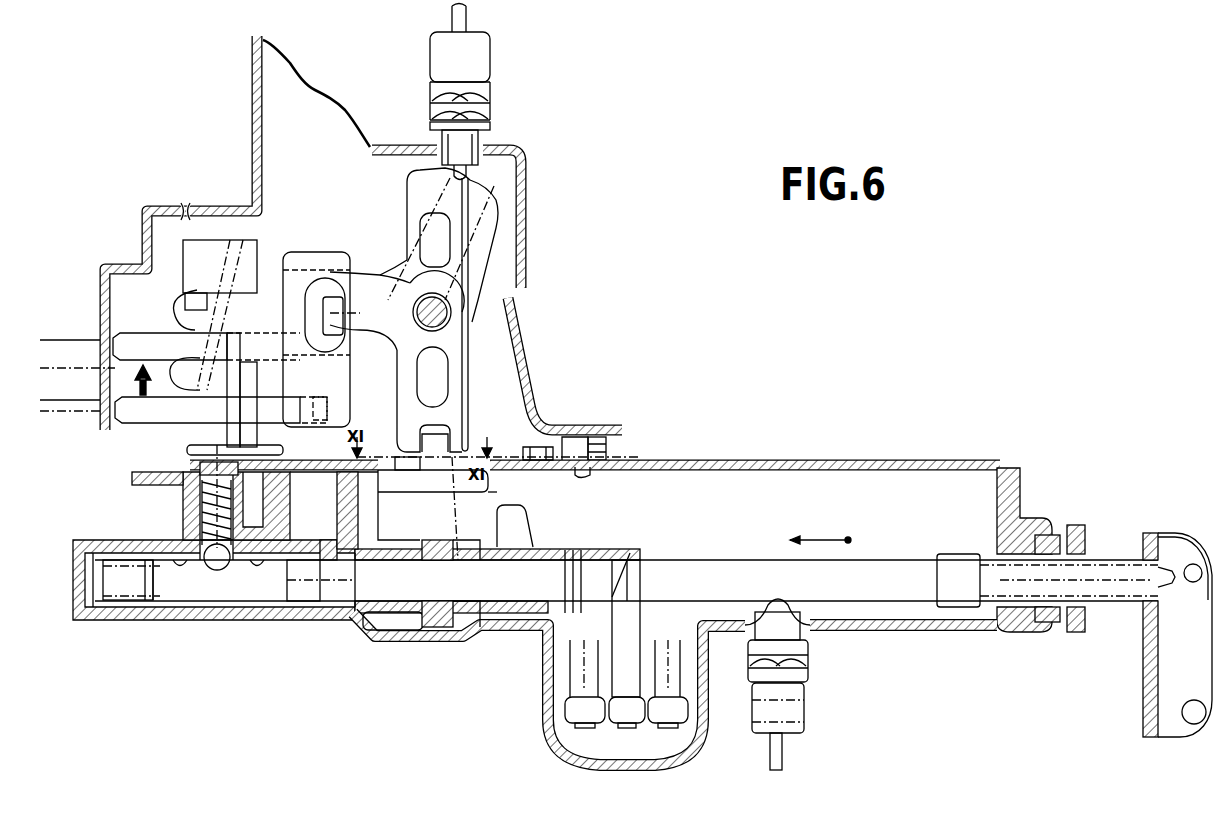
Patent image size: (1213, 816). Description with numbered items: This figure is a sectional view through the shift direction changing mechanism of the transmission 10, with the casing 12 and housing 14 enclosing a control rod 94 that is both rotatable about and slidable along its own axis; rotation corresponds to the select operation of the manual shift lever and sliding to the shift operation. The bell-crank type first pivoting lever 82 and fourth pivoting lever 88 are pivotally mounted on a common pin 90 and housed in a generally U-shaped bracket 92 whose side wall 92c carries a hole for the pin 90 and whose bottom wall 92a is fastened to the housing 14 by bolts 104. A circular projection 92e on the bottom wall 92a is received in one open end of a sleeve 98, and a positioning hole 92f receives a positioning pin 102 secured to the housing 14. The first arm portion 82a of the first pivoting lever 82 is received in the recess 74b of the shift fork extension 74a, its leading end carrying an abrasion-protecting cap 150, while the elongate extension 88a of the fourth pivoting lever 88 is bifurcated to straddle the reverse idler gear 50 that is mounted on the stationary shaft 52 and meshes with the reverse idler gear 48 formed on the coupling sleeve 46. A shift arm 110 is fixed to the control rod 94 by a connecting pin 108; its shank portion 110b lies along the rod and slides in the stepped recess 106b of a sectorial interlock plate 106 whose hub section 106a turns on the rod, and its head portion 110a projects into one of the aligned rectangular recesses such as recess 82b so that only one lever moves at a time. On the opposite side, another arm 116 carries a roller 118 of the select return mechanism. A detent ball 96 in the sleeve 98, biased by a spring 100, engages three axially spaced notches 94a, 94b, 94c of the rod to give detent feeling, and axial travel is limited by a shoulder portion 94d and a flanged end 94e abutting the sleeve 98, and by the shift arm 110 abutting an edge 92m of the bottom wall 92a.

The fuel injection pump 10 is at (114, 195).
The housing 12 is at (526, 165).
The housing 14 is at (1015, 492).
The coupling sleeve 46 is at (100, 414).
The reverse idler gear 48 is at (80, 350).
The reverse idler gear 50 is at (150, 340).
The stationary shaft 52 is at (202, 308).
The shift fork extension 74a is at (300, 258).
The recess 74b is at (334, 336).
The first pivoting lever 82 is at (455, 330).
The first arm portion 82a is at (362, 300).
The rectangular recess 82b is at (450, 428).
The fourth pivoting lever 88 is at (470, 212).
The elongate extension 88a is at (207, 390).
The common pin 90 is at (447, 300).
The bracket 92 is at (476, 384).
The bottom wall 92a is at (300, 473).
The side wall 92c is at (486, 350).
The circular projection 92e is at (190, 466).
The positioning hole 92f is at (580, 474).
The edge 92m is at (378, 472).
The control rod 94 is at (877, 580).
The notch 94a is at (228, 575).
The notch 94b is at (264, 578).
The notch 94c is at (186, 580).
The shoulder portion 94d is at (292, 590).
The flanged end 94e is at (152, 600).
The detent ball 96 is at (210, 568).
The sleeve 98 is at (199, 506).
The spring 100 is at (200, 488).
The positioning pin 102 is at (596, 434).
The bolt 104 is at (283, 450).
The interlock plate 106 is at (476, 637).
The hub section 106a is at (408, 622).
The stepped recess 106b is at (442, 600).
The connecting pin 108 is at (570, 606).
The shift arm 110 is at (503, 499).
The head portion 110a is at (540, 446).
The shank portion 110b is at (413, 500).
The arm 116 is at (626, 682).
The roller 118 is at (614, 712).
The cap 150 is at (335, 294).